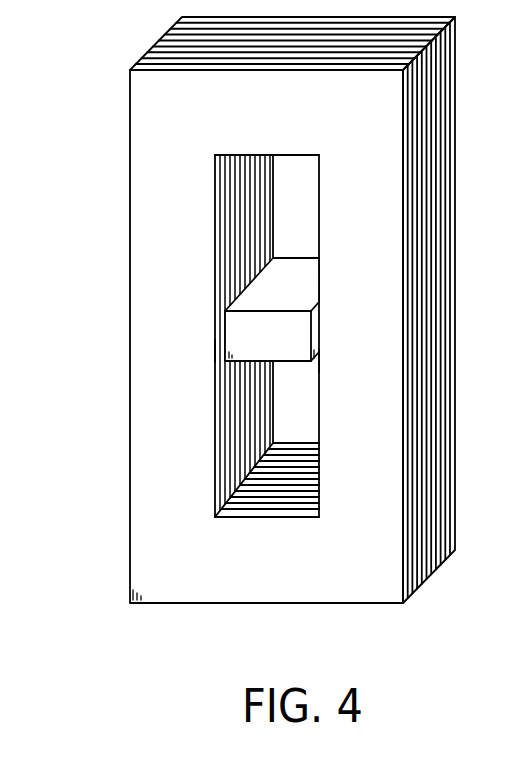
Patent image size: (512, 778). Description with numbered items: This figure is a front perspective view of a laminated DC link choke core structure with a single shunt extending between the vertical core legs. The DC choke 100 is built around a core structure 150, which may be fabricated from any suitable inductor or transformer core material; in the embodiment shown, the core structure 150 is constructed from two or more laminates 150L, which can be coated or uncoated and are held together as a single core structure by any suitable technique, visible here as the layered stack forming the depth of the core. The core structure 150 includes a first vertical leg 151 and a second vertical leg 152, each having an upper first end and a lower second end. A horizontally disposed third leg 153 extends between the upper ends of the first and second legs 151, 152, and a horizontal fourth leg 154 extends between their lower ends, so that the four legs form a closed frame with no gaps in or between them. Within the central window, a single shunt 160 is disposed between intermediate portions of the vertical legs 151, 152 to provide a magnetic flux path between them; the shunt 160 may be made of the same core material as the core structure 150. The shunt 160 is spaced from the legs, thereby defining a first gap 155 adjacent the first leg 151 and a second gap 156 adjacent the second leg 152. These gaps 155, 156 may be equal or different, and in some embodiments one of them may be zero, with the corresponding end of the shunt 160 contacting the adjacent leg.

The DC choke 100 is at (98, 28).
The core structure 150 is at (130, 104).
The laminates 150L is at (455, 104).
The first vertical leg 151 is at (184, 348).
The second vertical leg 152 is at (372, 348).
The third leg 153 is at (278, 132).
The fourth leg 154 is at (278, 580).
The first gap 155 is at (214, 357).
The second gap 156 is at (322, 365).
The shunt 160 is at (278, 348).